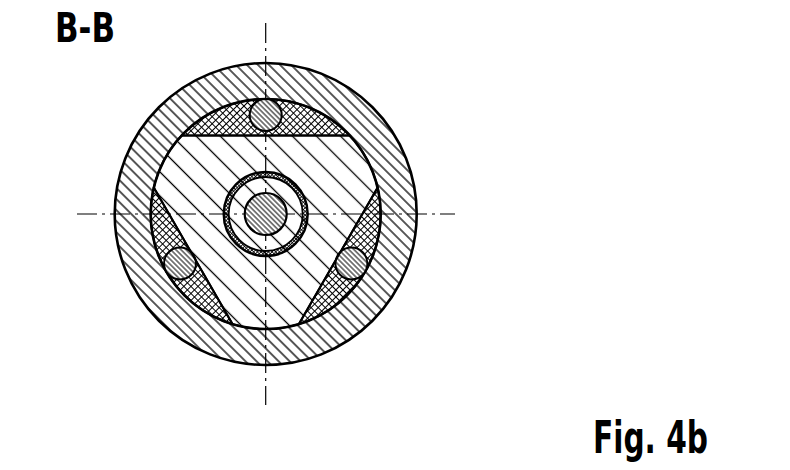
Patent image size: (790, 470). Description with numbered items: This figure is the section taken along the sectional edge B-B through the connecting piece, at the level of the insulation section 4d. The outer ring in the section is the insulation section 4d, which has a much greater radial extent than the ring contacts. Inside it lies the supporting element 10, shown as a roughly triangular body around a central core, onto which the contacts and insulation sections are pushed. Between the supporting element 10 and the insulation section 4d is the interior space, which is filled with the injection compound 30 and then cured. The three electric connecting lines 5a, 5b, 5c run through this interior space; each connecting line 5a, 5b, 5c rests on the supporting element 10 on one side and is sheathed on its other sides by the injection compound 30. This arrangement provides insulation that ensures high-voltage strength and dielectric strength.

The insulation section 4d is at (373, 138).
The injection compound 30 is at (347, 293).
The electric connecting line 5a is at (298, 110).
The electric connecting line 5b is at (373, 244).
The electric connecting line 5c is at (165, 246).
The supporting element 10 is at (177, 162).